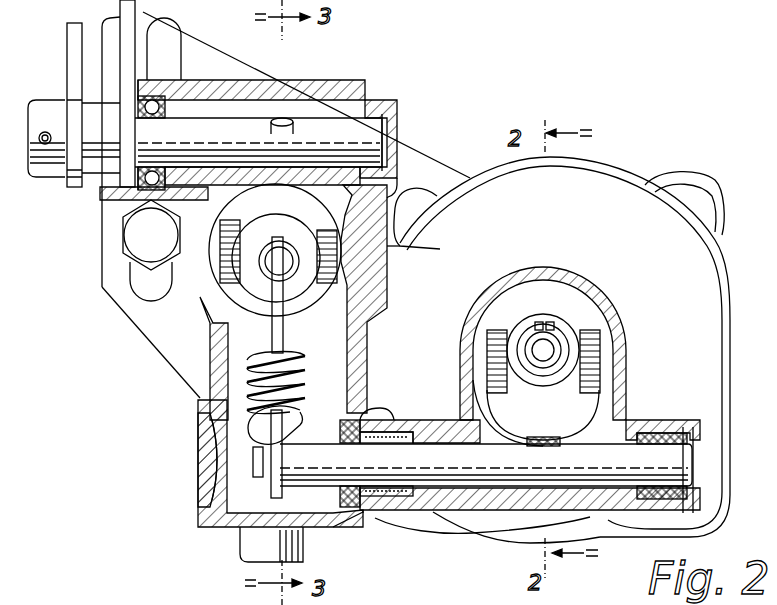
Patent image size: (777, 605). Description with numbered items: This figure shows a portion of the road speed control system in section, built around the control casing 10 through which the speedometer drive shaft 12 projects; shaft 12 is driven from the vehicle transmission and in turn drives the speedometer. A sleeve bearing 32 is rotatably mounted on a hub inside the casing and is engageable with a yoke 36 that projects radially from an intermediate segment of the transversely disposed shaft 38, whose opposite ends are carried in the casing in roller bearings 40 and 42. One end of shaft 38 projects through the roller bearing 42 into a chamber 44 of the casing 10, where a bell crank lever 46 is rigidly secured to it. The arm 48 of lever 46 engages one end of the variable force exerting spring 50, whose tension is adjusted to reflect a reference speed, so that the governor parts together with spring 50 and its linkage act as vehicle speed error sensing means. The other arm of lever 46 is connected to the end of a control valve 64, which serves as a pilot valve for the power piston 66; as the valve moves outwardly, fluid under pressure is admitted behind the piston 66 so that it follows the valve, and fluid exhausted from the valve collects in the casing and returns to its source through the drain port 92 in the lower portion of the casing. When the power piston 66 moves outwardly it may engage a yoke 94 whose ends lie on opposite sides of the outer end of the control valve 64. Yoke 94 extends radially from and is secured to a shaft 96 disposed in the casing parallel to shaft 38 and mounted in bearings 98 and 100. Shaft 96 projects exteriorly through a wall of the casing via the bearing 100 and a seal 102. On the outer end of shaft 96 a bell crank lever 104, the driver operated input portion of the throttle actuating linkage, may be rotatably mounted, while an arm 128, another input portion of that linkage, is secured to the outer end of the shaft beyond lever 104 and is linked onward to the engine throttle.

The control casing 10 is at (355, 295).
The shaft 12 is at (540, 350).
The sleeve bearing 32 is at (560, 346).
The yoke 36 is at (583, 407).
The shaft 38 is at (480, 453).
The roller bearing 40 is at (663, 435).
The roller bearing 42 is at (365, 514).
The chamber 44 is at (233, 460).
The bell crank lever 46 is at (268, 495).
The arm 48 is at (297, 410).
The variable force exerting spring 50 is at (293, 373).
The control valve 64 is at (268, 252).
The power piston 66 is at (262, 295).
The drain port 92 is at (257, 562).
The yoke 94 is at (330, 258).
The shaft 96 is at (327, 140).
The bearing 98 is at (392, 152).
The bearing 100 is at (232, 82).
The seal 102 is at (183, 97).
The bell crank lever 104 is at (117, 160).
The arm 128 is at (70, 95).